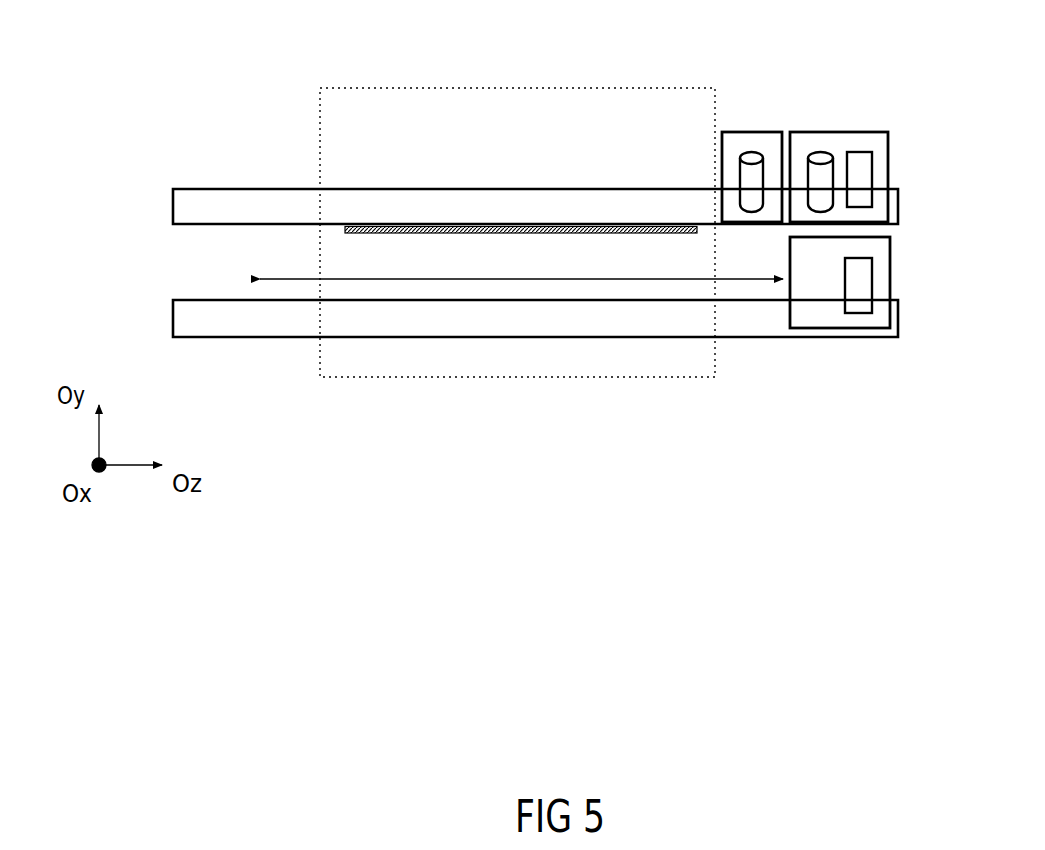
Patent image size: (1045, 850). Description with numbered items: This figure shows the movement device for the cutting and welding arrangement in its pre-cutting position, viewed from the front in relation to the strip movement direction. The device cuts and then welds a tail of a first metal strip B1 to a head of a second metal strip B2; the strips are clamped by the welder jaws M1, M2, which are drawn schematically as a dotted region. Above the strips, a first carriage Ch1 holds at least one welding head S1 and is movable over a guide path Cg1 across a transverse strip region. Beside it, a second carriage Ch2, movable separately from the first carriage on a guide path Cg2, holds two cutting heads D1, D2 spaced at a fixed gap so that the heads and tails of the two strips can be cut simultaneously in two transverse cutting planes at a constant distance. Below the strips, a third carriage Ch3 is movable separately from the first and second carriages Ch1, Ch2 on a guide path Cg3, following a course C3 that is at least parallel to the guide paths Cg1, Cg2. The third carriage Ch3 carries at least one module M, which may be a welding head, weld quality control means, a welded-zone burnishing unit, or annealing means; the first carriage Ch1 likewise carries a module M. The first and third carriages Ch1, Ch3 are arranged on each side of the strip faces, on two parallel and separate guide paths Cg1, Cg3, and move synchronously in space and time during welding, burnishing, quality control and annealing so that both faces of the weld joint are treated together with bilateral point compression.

The first metal strip B1 is at (502, 128).
The second metal strip B2 is at (388, 225).
The guide path Cg1 is at (465, 213).
The guide path Cg2 is at (173, 218).
The guide path Cg3 is at (173, 330).
The first carriage Ch1 is at (867, 130).
The second carriage Ch2 is at (737, 130).
The third carriage Ch3 is at (817, 330).
The cutting head D1 is at (690, 180).
The cutting head D2 is at (742, 176).
The welding head S1 is at (826, 152).
The module M is at (872, 163).
The welder jaw M1 is at (517, 280).
The welder jaw M2 is at (511, 377).
The course C3 is at (728, 282).